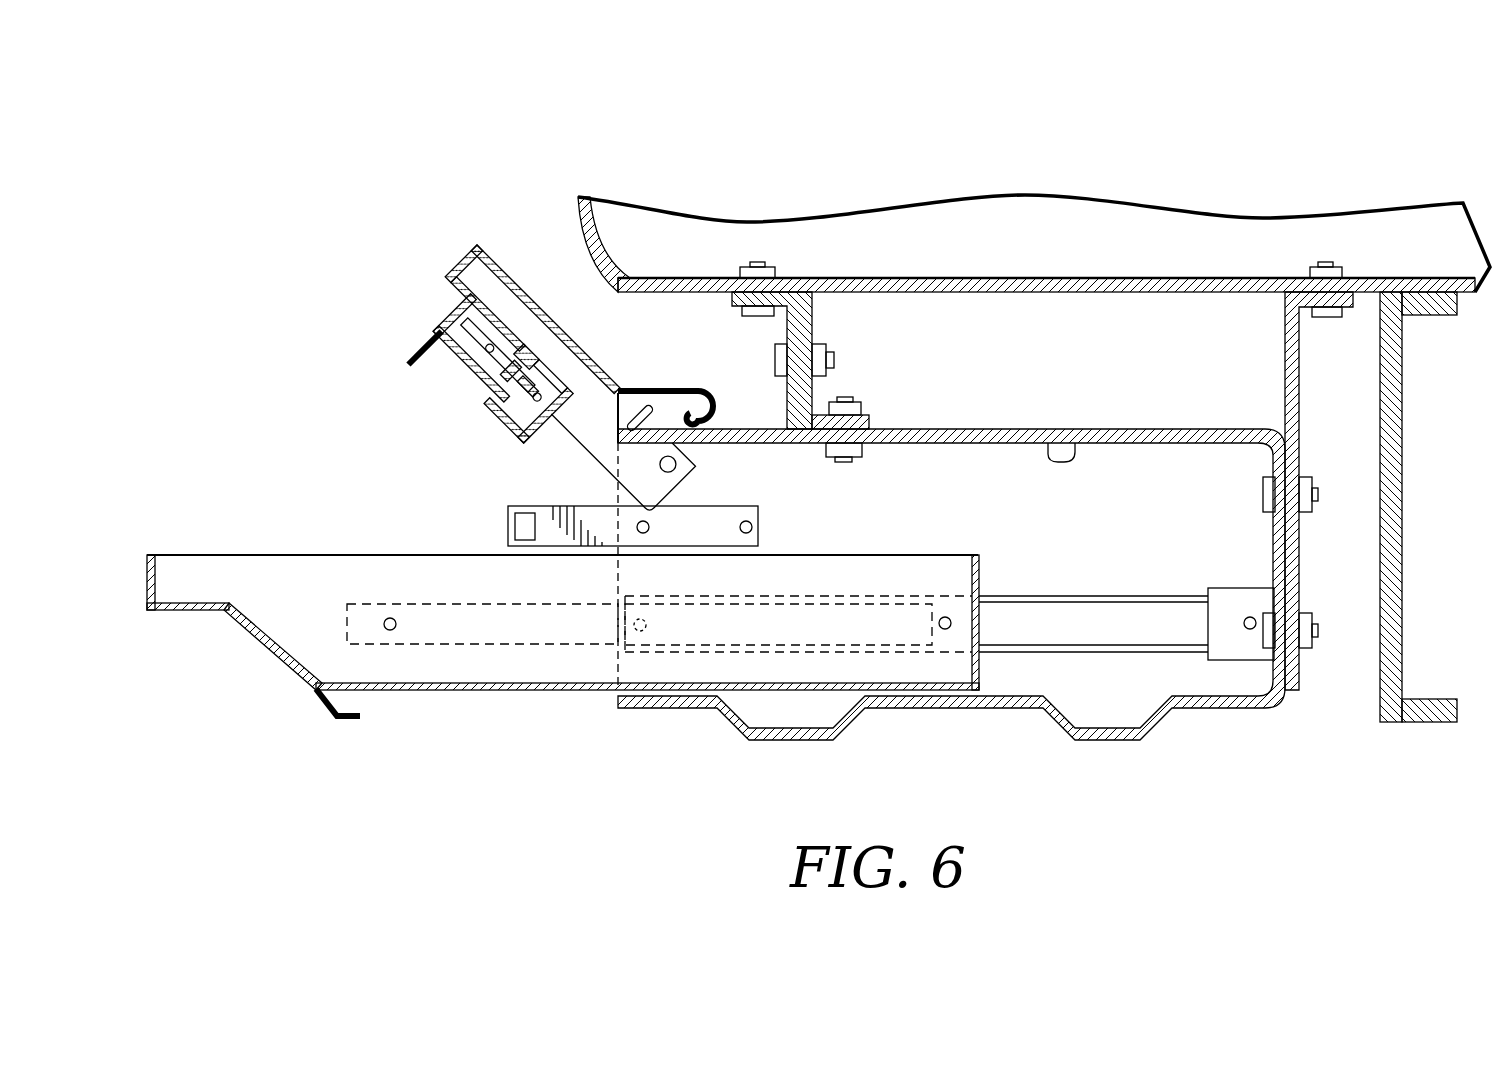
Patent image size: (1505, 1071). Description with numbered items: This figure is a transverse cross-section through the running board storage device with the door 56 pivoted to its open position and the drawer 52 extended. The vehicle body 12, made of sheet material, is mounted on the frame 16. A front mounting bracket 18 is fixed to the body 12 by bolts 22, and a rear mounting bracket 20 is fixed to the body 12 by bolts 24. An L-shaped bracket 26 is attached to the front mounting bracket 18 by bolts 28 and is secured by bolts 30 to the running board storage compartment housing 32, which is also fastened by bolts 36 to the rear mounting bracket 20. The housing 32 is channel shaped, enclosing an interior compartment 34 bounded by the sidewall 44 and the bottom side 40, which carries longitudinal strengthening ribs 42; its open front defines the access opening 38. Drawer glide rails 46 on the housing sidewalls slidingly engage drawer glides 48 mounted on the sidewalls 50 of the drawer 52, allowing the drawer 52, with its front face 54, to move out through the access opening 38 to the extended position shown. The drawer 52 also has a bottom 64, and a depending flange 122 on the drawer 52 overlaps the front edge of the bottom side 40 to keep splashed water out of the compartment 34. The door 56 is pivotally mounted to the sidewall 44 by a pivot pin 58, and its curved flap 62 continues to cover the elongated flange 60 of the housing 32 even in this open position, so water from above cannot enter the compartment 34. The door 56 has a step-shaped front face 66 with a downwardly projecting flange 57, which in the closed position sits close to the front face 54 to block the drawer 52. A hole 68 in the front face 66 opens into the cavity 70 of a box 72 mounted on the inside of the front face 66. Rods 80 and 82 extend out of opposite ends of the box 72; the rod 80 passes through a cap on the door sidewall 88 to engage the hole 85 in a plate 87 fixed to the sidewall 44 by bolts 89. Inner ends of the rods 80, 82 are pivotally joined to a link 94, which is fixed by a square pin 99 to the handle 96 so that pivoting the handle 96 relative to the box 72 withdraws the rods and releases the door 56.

The body 12 is at (1075, 270).
The frame 16 is at (1402, 585).
The front mounting bracket 18 is at (730, 299).
The rear mounting bracket 20 is at (1285, 350).
The bolts 22 is at (758, 262).
The bolts 24 is at (1322, 262).
The L-shaped bracket 26 is at (812, 327).
The bolts 28 is at (834, 353).
The bolts 30 is at (840, 397).
The running board storage compartment housing 32 is at (1010, 429).
The interior compartment 34 is at (1073, 450).
The bolts 36 is at (1318, 492).
The access opening 38 is at (642, 676).
The bottom side 40 is at (912, 698).
The longitudinal strengthening ribs 42 is at (785, 742).
The sidewall 44 is at (1137, 508).
The drawer glide rails 46 is at (1175, 598).
The drawer glides 48 is at (530, 648).
The sidewalls 50 is at (287, 575).
The drawer 52 is at (207, 540).
The front face 54 is at (188, 612).
The door 56 is at (497, 248).
The downwardly projecting flange 57 is at (413, 350).
The pivot pin 58 is at (688, 393).
The flange 60 is at (648, 410).
The curved flap 62 is at (716, 419).
The bottom wall 64 is at (433, 673).
The front face 66 is at (452, 264).
The hole 68 is at (443, 322).
The cavity 70 is at (488, 306).
The box 72 is at (516, 327).
The rod 80 is at (452, 347).
The rod 82 is at (526, 404).
The hole 85 is at (507, 518).
The plate 87 is at (740, 508).
The sidewall 88 is at (587, 412).
The bolts 89 is at (649, 529).
The link 94 is at (484, 392).
The handle 96 is at (447, 304).
The square pin 99 is at (535, 357).
The depending flange 122 is at (327, 716).